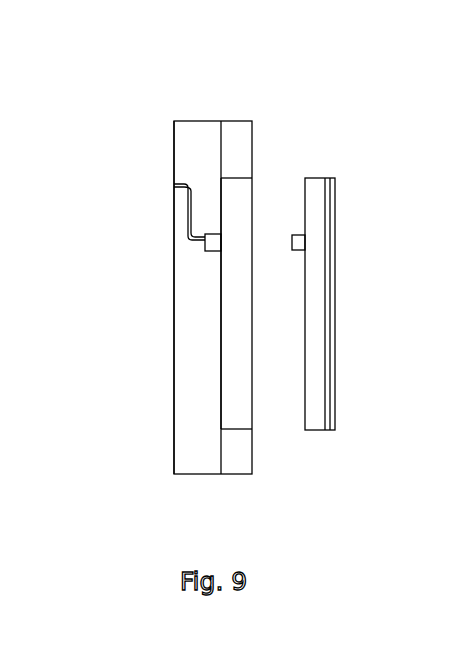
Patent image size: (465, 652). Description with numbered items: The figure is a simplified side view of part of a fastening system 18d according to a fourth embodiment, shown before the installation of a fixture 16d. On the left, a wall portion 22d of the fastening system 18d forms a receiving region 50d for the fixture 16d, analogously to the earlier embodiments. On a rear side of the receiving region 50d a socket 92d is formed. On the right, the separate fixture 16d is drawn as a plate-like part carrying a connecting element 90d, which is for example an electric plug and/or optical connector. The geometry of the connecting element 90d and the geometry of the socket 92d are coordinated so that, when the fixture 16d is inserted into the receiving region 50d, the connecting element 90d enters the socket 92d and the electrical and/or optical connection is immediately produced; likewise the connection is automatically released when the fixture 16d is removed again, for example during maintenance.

The fastening system 18d is at (191, 98).
The wall portion 22d is at (161, 156).
The socket 92d is at (214, 252).
The receiving region 50d is at (226, 388).
The fixture 16d is at (327, 159).
The connecting element 90d is at (293, 235).